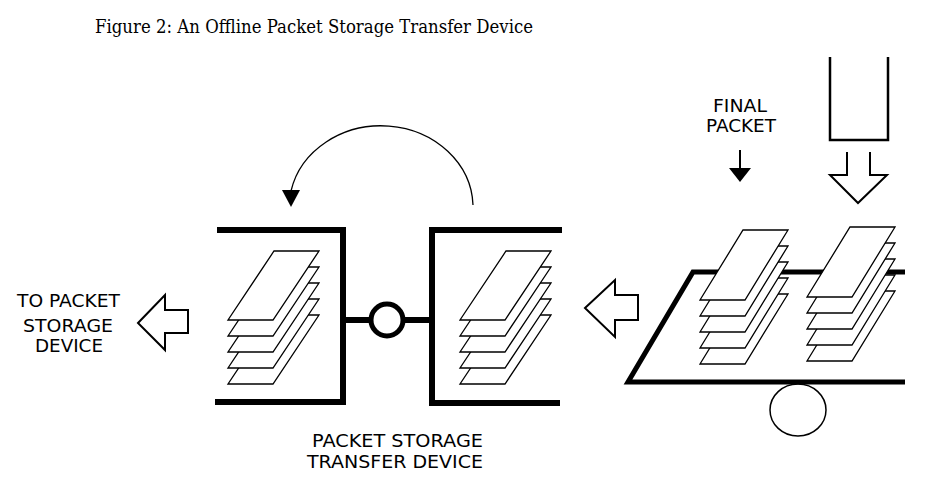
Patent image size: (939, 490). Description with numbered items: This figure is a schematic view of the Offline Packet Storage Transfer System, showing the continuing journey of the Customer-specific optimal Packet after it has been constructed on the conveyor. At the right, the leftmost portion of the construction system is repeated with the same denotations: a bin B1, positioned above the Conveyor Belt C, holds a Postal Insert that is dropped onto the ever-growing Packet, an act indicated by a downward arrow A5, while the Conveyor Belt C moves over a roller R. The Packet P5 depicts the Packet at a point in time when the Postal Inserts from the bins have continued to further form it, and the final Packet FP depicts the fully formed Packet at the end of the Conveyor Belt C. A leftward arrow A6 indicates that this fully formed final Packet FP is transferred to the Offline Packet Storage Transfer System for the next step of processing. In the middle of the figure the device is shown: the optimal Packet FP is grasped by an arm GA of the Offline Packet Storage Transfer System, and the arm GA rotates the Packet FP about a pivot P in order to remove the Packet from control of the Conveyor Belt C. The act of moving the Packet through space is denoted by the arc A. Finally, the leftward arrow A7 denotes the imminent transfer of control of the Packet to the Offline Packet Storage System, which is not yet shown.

The arc A is at (377, 150).
The arm GA is at (388, 304).
The pivot P is at (387, 303).
The final Packet FP is at (508, 307).
The Packet P5 is at (851, 294).
The Conveyor Belt C is at (773, 327).
The roller R is at (798, 410).
The bin B1 is at (859, 98).
The downward arrow A5 is at (858, 177).
The leftward arrow A6 is at (611, 308).
The leftward arrow A7 is at (163, 322).